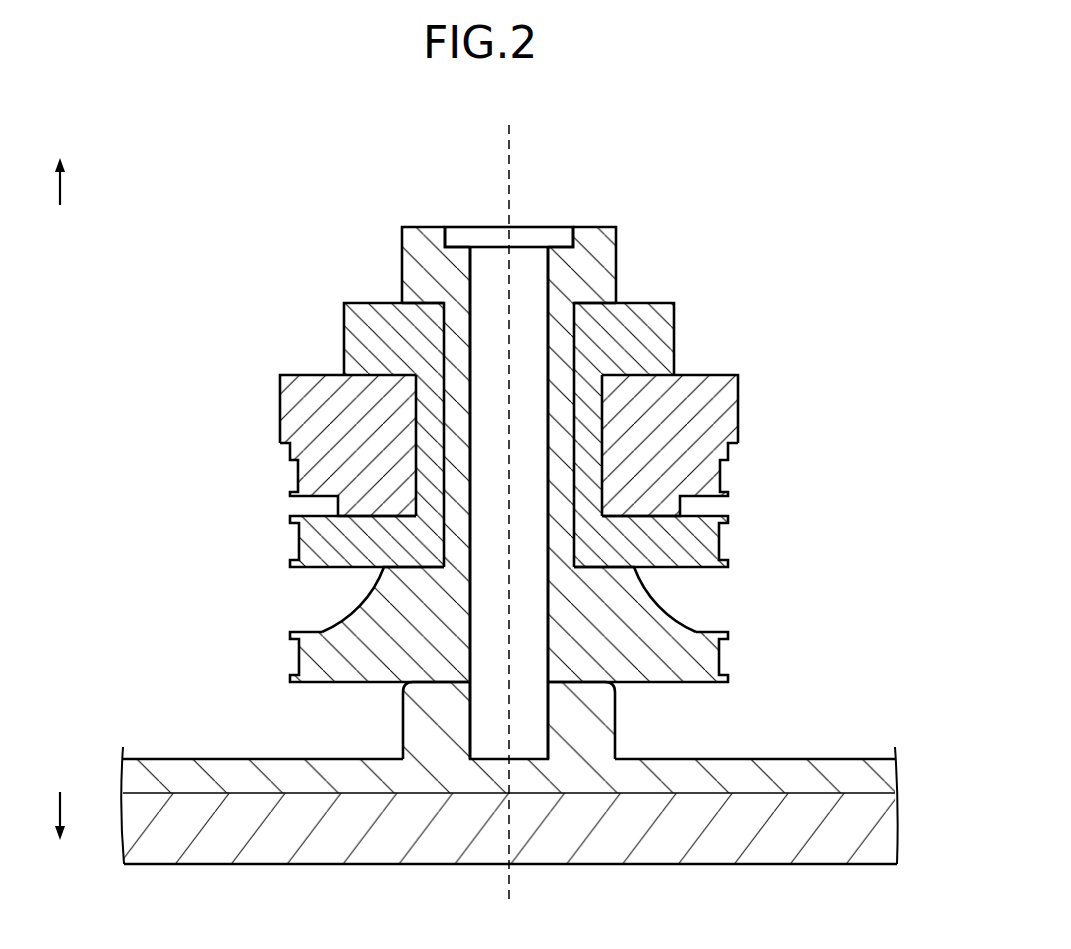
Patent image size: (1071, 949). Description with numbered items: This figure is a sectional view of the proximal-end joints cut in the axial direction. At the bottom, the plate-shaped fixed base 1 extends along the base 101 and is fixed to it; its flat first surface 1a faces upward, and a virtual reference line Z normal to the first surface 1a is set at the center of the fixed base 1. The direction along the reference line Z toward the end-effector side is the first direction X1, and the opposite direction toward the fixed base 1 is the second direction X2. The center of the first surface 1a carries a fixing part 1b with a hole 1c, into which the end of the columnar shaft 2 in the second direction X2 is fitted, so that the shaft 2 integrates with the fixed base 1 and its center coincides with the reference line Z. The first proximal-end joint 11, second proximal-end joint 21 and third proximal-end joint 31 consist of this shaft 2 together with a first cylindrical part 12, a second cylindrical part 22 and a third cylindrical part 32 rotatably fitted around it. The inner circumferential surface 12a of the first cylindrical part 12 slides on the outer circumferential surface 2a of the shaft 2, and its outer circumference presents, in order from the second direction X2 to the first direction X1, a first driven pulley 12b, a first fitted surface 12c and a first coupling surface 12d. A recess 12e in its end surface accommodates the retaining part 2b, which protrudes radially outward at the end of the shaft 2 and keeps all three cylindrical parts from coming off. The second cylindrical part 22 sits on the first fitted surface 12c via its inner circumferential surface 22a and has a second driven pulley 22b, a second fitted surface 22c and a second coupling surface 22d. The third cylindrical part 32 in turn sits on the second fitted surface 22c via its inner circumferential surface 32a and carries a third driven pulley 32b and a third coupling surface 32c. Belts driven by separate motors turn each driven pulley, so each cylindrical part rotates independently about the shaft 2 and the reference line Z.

The fixed base 1 is at (842, 770).
The first surface 1a is at (767, 760).
The fixing part 1b is at (417, 720).
The hole 1c is at (556, 717).
The base 101 is at (168, 806).
The shaft 2 is at (489, 217).
The outer circumferential surface 2a is at (470, 278).
The retaining part 2b is at (462, 232).
The first proximal-end joint 11 is at (609, 219).
The first cylindrical part 12 is at (602, 245).
The inner circumferential surface 12a is at (549, 277).
The first driven pulley 12b is at (298, 653).
The first fitted surface 12c is at (382, 568).
The first coupling surface 12d is at (402, 245).
The recess 12e is at (560, 240).
The second proximal-end joint 21 is at (682, 295).
The second cylindrical part 22 is at (653, 322).
The inner circumferential surface 22a is at (575, 538).
The second driven pulley 22b is at (298, 537).
The second fitted surface 22c is at (416, 422).
The second coupling surface 22d is at (344, 333).
The third proximal-end joint 31 is at (747, 365).
The third cylindrical part 32 is at (728, 398).
The inner circumferential surface 32a is at (605, 476).
The third driven pulley 32b is at (295, 475).
The third coupling surface 32c is at (280, 385).
The reference line Z is at (511, 148).
The first direction X1 is at (60, 168).
The second direction X2 is at (60, 831).